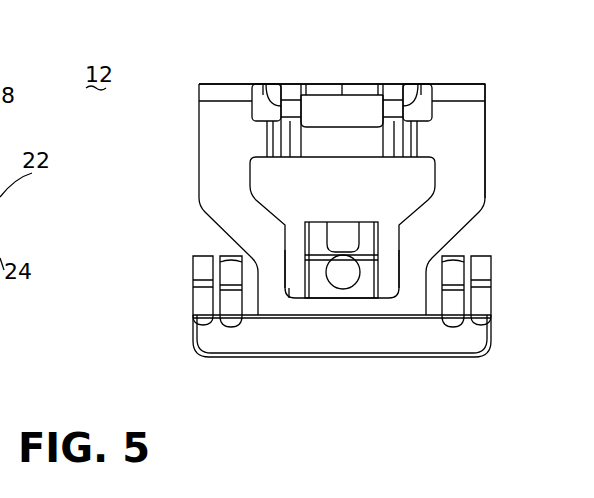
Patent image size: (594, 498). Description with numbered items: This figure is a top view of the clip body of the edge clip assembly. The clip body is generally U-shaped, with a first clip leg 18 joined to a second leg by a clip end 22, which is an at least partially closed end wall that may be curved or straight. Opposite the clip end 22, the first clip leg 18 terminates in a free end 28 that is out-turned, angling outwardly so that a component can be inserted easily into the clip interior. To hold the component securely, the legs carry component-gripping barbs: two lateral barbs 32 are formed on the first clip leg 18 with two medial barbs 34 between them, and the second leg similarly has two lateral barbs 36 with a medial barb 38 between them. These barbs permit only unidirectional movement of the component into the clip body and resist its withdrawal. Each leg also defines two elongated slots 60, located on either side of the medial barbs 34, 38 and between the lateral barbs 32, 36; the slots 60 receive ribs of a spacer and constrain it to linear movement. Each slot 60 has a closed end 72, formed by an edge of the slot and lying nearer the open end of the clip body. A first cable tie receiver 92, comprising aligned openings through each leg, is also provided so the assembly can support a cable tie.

The clip end 22 is at (452, 82).
The first clip leg 18 is at (478, 127).
The first cable tie receiver 92 is at (355, 108).
The closed end 72 is at (293, 223).
The slot 60 is at (287, 267).
The medial barb 34 is at (311, 220).
The medial barb 38 is at (337, 220).
The lateral barb 36 is at (222, 253).
The lateral barb 32 is at (193, 253).
The free end 28 is at (332, 333).